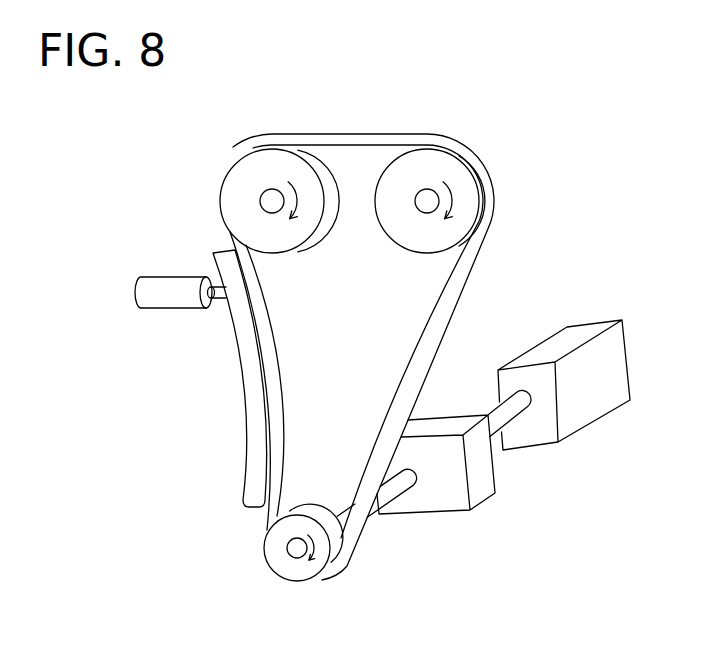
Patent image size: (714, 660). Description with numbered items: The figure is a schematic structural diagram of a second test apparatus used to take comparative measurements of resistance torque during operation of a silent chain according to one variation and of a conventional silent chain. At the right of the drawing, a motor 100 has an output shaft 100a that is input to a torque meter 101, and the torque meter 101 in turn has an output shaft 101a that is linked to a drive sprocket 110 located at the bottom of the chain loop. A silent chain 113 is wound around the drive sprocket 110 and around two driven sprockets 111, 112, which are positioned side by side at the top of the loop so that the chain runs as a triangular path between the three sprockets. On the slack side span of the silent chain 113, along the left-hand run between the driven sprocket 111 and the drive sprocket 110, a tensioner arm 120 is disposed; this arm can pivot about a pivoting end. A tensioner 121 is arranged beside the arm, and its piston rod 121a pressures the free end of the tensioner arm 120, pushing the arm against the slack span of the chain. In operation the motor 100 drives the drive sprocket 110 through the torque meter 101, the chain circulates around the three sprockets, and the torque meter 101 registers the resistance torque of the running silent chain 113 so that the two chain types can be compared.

The motor 100 is at (557, 330).
The output shaft 100a is at (513, 410).
The torque meter 101 is at (437, 414).
The output shaft 101a is at (407, 490).
The drive sprocket 110 is at (270, 563).
The driven sprocket 111 is at (224, 185).
The driven sprocket 112 is at (392, 228).
The silent chain 113 is at (433, 339).
The tensioner arm 120 is at (243, 371).
The tensioner 121 is at (166, 288).
The piston rod 121a is at (217, 301).